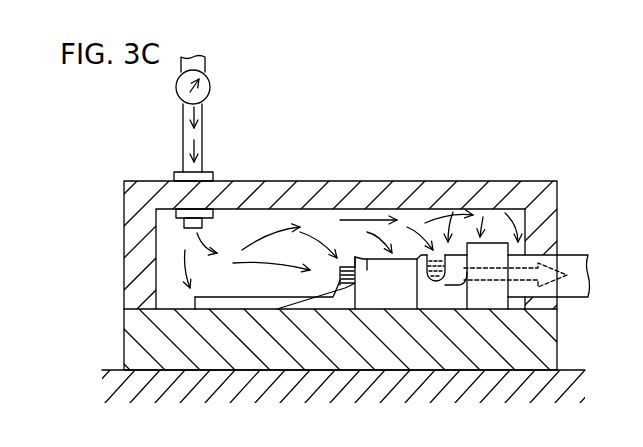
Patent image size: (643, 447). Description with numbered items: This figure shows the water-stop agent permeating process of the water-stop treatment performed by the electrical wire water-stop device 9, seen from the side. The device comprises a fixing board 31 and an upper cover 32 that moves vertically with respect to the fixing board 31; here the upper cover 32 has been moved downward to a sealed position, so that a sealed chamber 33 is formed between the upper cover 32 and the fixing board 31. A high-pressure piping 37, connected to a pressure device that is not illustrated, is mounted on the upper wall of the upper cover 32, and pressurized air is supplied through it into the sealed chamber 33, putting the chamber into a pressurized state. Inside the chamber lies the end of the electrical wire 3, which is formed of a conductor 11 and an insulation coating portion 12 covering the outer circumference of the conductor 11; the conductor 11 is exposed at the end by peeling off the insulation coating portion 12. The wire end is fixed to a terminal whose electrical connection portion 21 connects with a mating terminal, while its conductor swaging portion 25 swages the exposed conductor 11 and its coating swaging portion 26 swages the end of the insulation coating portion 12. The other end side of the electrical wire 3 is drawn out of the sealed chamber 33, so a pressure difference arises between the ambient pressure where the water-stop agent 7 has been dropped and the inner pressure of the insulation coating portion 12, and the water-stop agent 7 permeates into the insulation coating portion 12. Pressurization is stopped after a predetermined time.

The electrical wire 3 is at (570, 248).
The water-stop agent 7 is at (440, 256).
The electrical wire water-stop device 9 is at (326, 234).
The conductor 11 is at (341, 266).
The insulation coating portion 12 is at (578, 252).
The electrical connection portion 21 is at (196, 303).
The conductor swaging portion 25 is at (363, 258).
The coating swaging portion 26 is at (490, 247).
The fixing board 31 is at (128, 350).
The upper cover 32 is at (538, 186).
The sealed chamber 33 is at (447, 255).
The high-pressure piping 37 is at (183, 108).